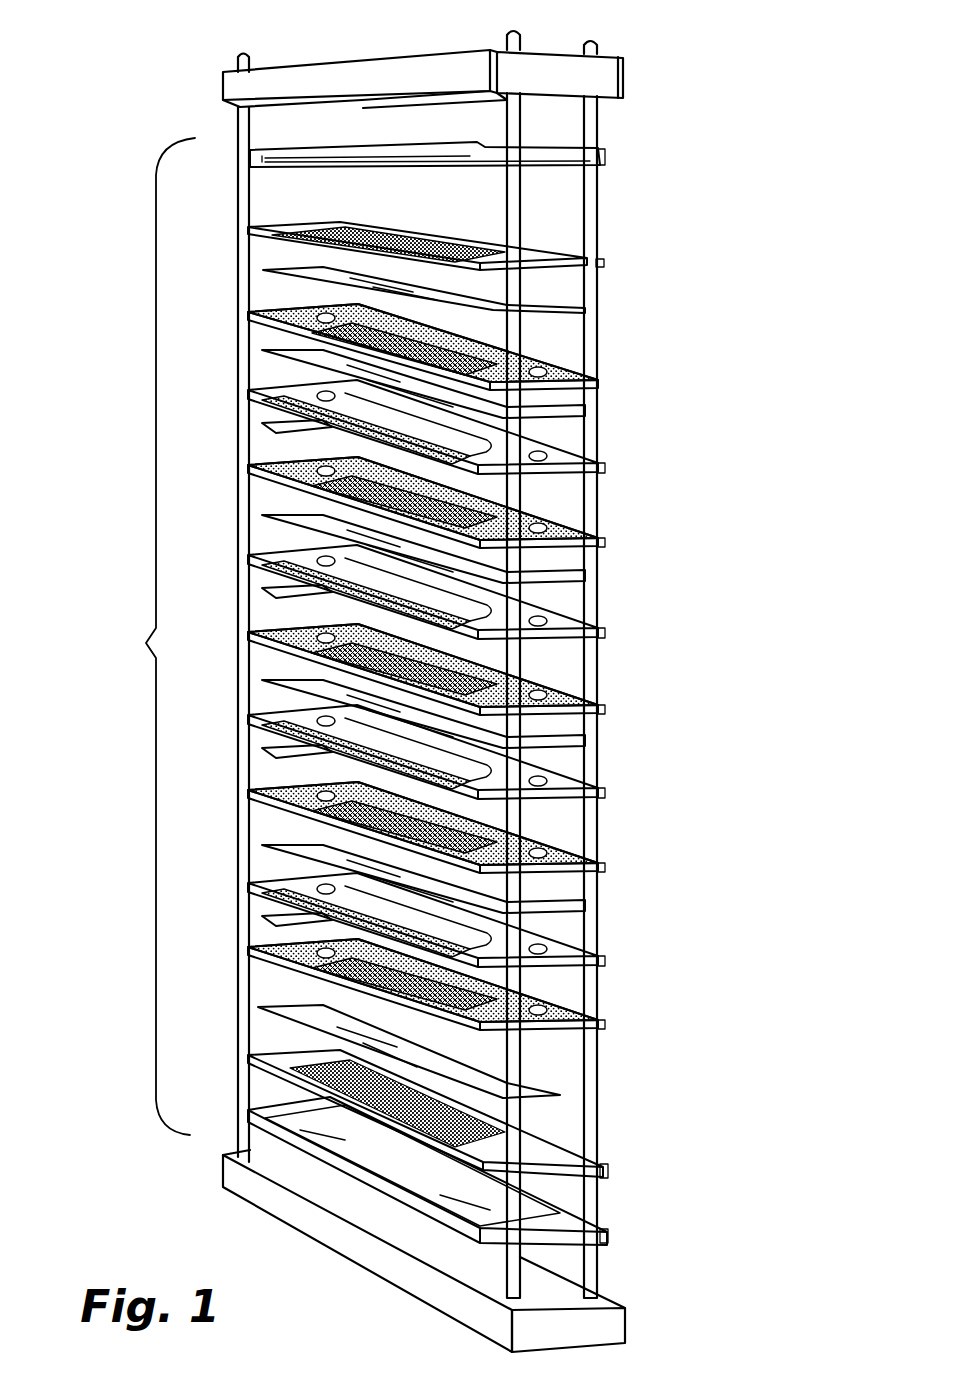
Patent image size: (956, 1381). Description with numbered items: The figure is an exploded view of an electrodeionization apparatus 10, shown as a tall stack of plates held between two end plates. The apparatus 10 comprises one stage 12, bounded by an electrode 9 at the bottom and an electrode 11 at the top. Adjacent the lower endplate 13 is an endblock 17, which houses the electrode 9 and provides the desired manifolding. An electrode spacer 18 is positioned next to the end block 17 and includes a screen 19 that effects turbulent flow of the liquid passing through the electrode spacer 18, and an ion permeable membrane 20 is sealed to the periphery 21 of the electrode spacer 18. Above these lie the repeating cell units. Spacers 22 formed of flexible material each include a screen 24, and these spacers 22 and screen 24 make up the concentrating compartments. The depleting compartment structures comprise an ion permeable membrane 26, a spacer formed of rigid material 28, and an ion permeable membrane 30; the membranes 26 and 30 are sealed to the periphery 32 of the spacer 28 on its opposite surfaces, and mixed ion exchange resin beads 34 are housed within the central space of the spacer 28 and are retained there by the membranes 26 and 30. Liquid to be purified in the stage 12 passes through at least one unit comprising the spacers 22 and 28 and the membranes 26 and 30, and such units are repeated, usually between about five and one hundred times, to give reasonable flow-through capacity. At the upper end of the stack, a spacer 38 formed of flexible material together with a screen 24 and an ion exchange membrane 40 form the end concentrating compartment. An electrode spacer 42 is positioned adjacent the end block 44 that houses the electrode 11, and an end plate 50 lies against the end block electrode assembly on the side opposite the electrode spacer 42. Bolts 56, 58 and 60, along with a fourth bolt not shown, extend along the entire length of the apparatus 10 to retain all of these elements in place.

The electrode 9 is at (355, 1155).
The electrodeionization apparatus 10 is at (108, 167).
The electrode 11 is at (350, 168).
The stage 12 is at (150, 636).
The endplate 13 is at (625, 1325).
The endblock 17 is at (608, 1236).
The electrode spacer 18 is at (608, 1170).
The screen 19 is at (295, 1063).
The ion permeable membrane 20 is at (540, 1100).
The periphery 21 is at (555, 1150).
The spacer 22 is at (605, 542).
The screen 24 is at (282, 470).
The ion permeable membrane 26 is at (505, 478).
The spacer formed of rigid material 28 is at (605, 467).
The ion permeable membrane 30 is at (505, 430).
The periphery 32 is at (266, 398).
The mixed ion exchange resin beads 34 is at (298, 432).
The spacer formed of flexible material 38 is at (600, 385).
The ion exchange membrane 40 is at (586, 310).
The electrode spacer 42 is at (604, 262).
The end block 44 is at (605, 158).
The end plate 50 is at (626, 85).
The bolt 56 is at (250, 60).
The bolt 58 is at (521, 33).
The bolt 60 is at (598, 40).